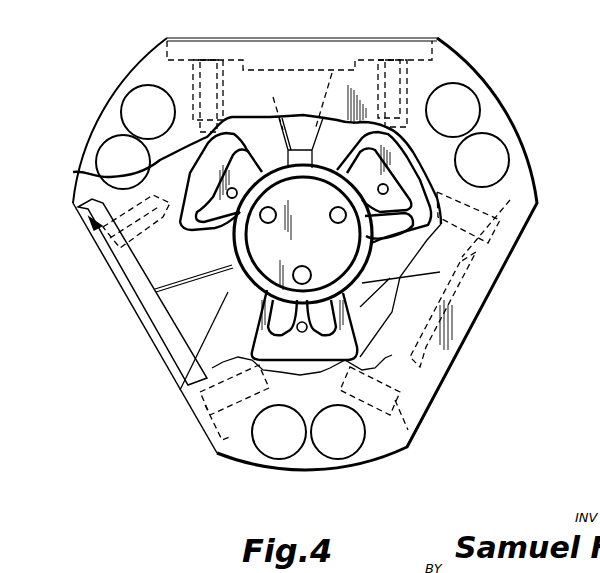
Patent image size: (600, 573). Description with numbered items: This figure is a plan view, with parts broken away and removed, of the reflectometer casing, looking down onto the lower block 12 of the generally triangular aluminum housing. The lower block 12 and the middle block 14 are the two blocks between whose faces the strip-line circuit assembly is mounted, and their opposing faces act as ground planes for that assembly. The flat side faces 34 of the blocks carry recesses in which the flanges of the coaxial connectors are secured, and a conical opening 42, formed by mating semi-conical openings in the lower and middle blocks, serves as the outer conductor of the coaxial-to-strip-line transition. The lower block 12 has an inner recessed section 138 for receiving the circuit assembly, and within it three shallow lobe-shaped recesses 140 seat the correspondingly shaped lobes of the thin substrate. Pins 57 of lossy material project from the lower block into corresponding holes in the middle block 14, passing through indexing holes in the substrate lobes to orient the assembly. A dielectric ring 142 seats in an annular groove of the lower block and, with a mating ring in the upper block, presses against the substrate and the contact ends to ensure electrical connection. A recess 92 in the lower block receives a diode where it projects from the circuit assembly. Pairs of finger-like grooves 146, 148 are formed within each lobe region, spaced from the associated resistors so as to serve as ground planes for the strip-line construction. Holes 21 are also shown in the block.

The lower block 12 is at (148, 267).
The middle block 14 is at (513, 181).
The bolt holes 21 is at (476, 102).
The flat side face 34 is at (92, 223).
The conical opening 42 is at (200, 320).
The pins 57 is at (387, 186).
The recess 92 is at (306, 272).
The inner recessed section 138 is at (257, 128).
The lobe-shaped recesses 140 is at (184, 224).
The dielectric ring 142 is at (370, 249).
The finger-like groove 146 is at (268, 332).
The finger-like groove 148 is at (343, 327).